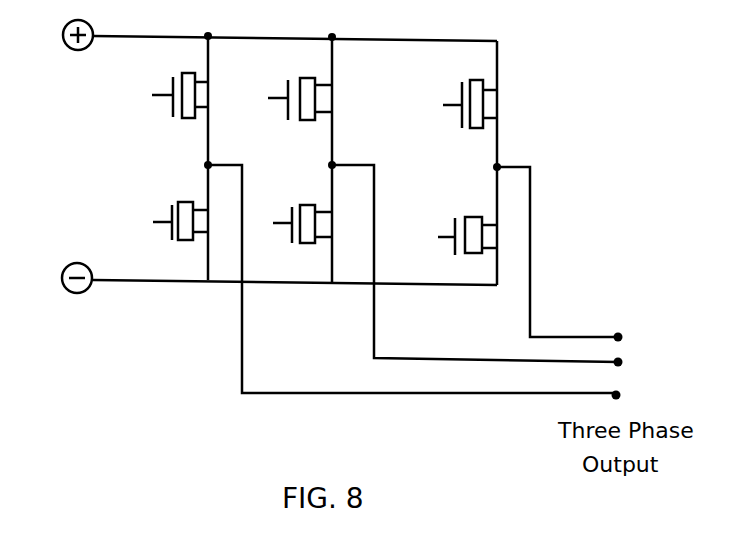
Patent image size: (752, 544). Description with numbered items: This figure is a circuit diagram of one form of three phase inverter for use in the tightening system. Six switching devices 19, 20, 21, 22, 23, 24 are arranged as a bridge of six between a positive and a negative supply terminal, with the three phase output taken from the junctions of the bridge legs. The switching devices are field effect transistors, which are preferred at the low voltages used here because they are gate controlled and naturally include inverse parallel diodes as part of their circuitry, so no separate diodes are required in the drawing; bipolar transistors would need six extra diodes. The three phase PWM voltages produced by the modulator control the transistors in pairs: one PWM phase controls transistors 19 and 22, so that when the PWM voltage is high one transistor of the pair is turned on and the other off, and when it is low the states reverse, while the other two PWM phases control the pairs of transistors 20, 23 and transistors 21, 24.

The switching device 19 is at (186, 73).
The switching device 20 is at (308, 128).
The switching device 21 is at (482, 107).
The switching device 22 is at (185, 203).
The switching device 23 is at (308, 207).
The switching device 24 is at (478, 232).